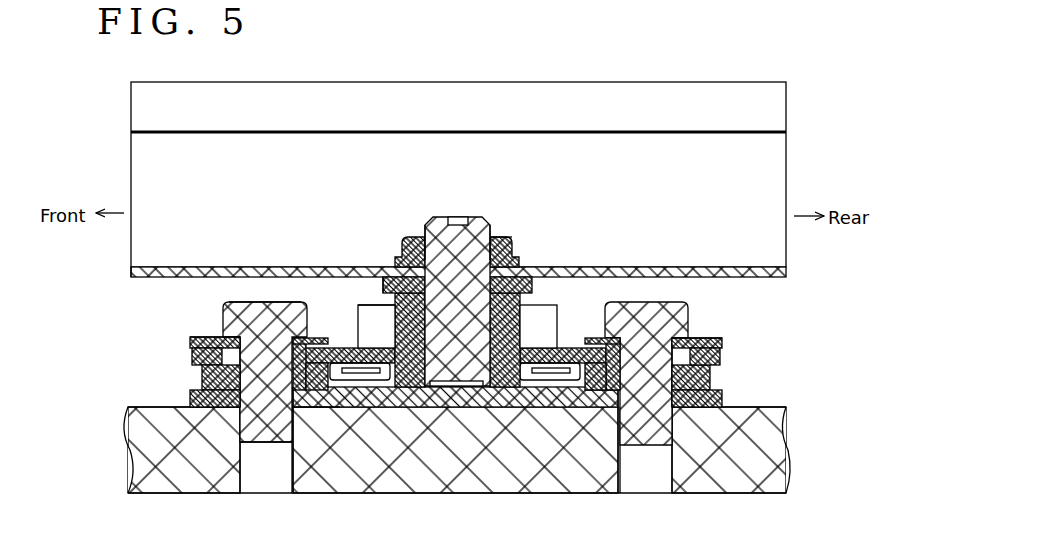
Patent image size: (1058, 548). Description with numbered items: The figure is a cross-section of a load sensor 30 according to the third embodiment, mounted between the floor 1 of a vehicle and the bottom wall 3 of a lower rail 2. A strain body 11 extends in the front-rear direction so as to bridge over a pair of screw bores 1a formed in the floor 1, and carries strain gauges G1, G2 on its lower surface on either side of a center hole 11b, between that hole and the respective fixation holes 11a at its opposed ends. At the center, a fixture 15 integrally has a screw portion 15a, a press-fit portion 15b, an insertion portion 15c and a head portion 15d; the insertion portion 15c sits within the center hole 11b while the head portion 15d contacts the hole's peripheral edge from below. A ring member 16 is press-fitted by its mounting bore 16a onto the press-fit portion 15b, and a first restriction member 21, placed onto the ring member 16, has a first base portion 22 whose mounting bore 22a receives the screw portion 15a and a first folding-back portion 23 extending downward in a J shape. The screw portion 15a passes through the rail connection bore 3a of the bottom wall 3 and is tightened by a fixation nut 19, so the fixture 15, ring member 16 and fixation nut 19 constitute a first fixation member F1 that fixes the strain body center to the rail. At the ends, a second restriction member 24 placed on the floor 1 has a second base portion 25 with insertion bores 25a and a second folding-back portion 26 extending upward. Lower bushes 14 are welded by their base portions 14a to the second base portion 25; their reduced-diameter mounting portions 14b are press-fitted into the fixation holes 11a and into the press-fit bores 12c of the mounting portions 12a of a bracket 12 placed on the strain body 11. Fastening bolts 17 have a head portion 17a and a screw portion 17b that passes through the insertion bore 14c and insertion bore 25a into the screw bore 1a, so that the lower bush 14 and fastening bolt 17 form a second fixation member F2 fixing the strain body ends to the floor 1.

The floor 1 is at (772, 405).
The screw bore 1a is at (286, 476).
The lower rail 2 is at (741, 78).
The bottom wall 3 is at (767, 276).
The rail connection bore 3a is at (501, 262).
The strain body 11 is at (720, 358).
The fixation hole 11a is at (330, 323).
The center hole 11b is at (486, 393).
The bracket 12 is at (724, 341).
The mounting portion 12a is at (214, 337).
The press-fit bore 12c is at (243, 347).
The lower bush 14 is at (221, 402).
The base portion 14a is at (206, 378).
The mounting portion 14b is at (222, 353).
The insertion bore 14c is at (242, 364).
The fixture 15 is at (443, 230).
The screw portion 15a is at (419, 248).
The press-fit portion 15b is at (378, 338).
The insertion portion 15c is at (405, 381).
The head portion 15d is at (460, 386).
The ring member 16 is at (399, 262).
The mounting bore 16a is at (518, 308).
The fastening bolt 17 is at (272, 302).
The head portion 17a is at (236, 301).
The screw portion 17b is at (246, 428).
The fixation nut 19 is at (495, 237).
The first restriction member 21 is at (397, 282).
The first base portion 22 is at (523, 274).
The mounting bore 22a is at (478, 246).
The first folding-back portion 23 is at (397, 272).
The second restriction member 24 is at (334, 406).
The second base portion 25 is at (587, 398).
The insertion bore 25a is at (297, 412).
The second folding-back portion 26 is at (360, 284).
The load sensor 30 is at (127, 328).
The strain gauge G1 is at (372, 381).
The strain gauge G2 is at (548, 383).
The first fixation member F1 is at (515, 192).
The second fixation member F2 is at (212, 290).